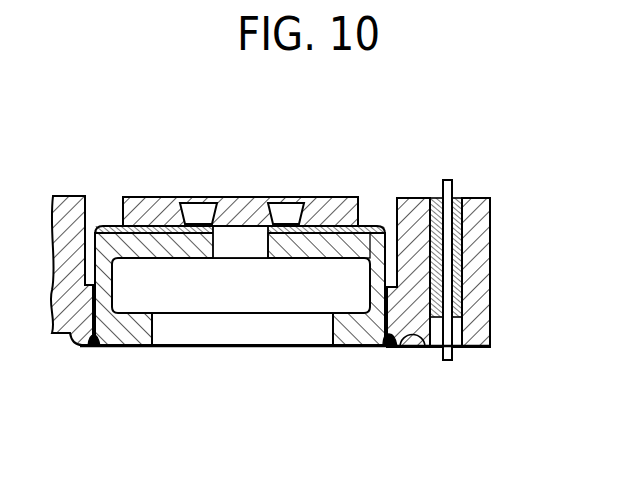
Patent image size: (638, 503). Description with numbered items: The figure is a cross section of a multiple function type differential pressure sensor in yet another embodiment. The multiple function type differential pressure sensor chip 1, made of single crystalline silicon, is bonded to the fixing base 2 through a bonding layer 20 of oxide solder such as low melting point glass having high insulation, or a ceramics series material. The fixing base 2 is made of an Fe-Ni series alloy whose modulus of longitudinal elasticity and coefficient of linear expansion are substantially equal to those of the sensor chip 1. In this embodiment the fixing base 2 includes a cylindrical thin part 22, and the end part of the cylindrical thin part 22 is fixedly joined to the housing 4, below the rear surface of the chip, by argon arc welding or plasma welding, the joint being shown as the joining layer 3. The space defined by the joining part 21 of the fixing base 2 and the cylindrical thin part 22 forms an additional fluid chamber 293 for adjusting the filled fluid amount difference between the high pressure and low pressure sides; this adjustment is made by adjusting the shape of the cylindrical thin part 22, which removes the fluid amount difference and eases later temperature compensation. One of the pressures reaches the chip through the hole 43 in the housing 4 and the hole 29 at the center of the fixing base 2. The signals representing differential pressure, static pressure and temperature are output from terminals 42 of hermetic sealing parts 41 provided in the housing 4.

The multiple function type differential pressure sensor chip 1 is at (148, 222).
The fixing base 2 is at (142, 250).
The joining layer 3 is at (383, 342).
The housing 4 is at (472, 321).
The bonding layer 20 is at (361, 226).
The joining part 21 is at (310, 248).
The cylindrical thin part 22 is at (417, 343).
The hole 29 is at (243, 248).
The hermetic sealing parts 41 is at (460, 257).
The terminals 42 is at (453, 190).
The hole 43 is at (173, 328).
The additional fluid chamber 293 is at (203, 288).